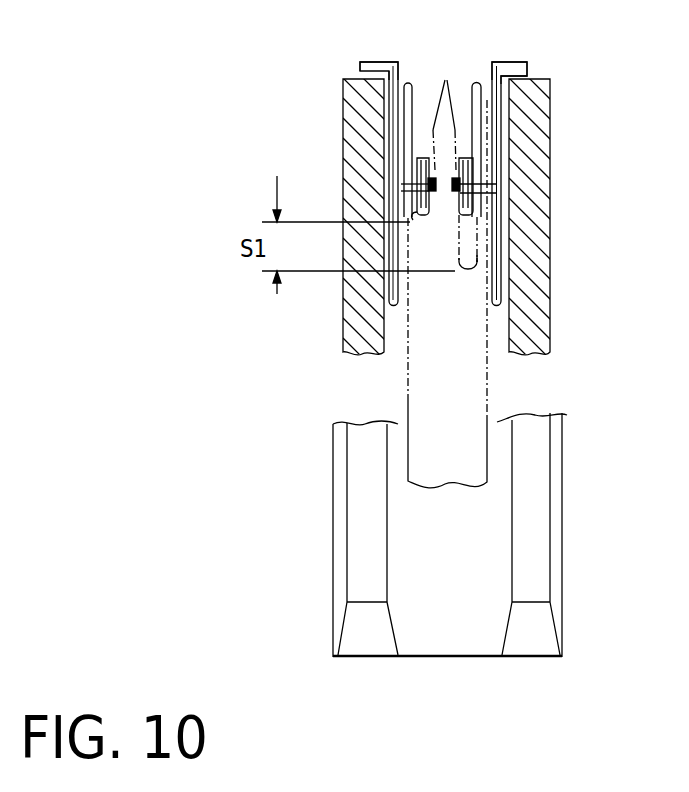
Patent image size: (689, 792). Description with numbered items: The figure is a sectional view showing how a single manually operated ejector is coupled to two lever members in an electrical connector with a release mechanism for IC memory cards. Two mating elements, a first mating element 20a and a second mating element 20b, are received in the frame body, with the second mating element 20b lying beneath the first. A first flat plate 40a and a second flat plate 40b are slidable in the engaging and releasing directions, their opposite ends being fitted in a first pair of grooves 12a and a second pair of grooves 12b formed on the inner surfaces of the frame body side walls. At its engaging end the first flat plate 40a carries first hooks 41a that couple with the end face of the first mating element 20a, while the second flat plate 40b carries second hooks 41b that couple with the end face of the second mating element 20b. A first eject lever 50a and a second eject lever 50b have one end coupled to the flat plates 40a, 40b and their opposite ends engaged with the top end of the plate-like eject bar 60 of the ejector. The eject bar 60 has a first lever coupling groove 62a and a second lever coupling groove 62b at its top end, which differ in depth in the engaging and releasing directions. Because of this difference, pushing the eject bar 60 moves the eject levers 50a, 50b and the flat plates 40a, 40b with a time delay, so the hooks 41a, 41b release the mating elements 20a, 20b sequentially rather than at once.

The first pair of grooves 12a is at (365, 640).
The second pair of grooves 12b is at (524, 640).
The first mating element 20a is at (362, 133).
The second mating element 20b is at (530, 312).
The first flat plate 40a is at (393, 102).
The second flat plate 40b is at (494, 110).
The first hooks 41a is at (363, 62).
The second hooks 41b is at (522, 62).
The first eject lever 50a is at (417, 158).
The second eject lever 50b is at (460, 193).
The eject bar 60 is at (445, 80).
The first lever coupling groove 62a is at (433, 130).
The second lever coupling groove 62b is at (477, 83).